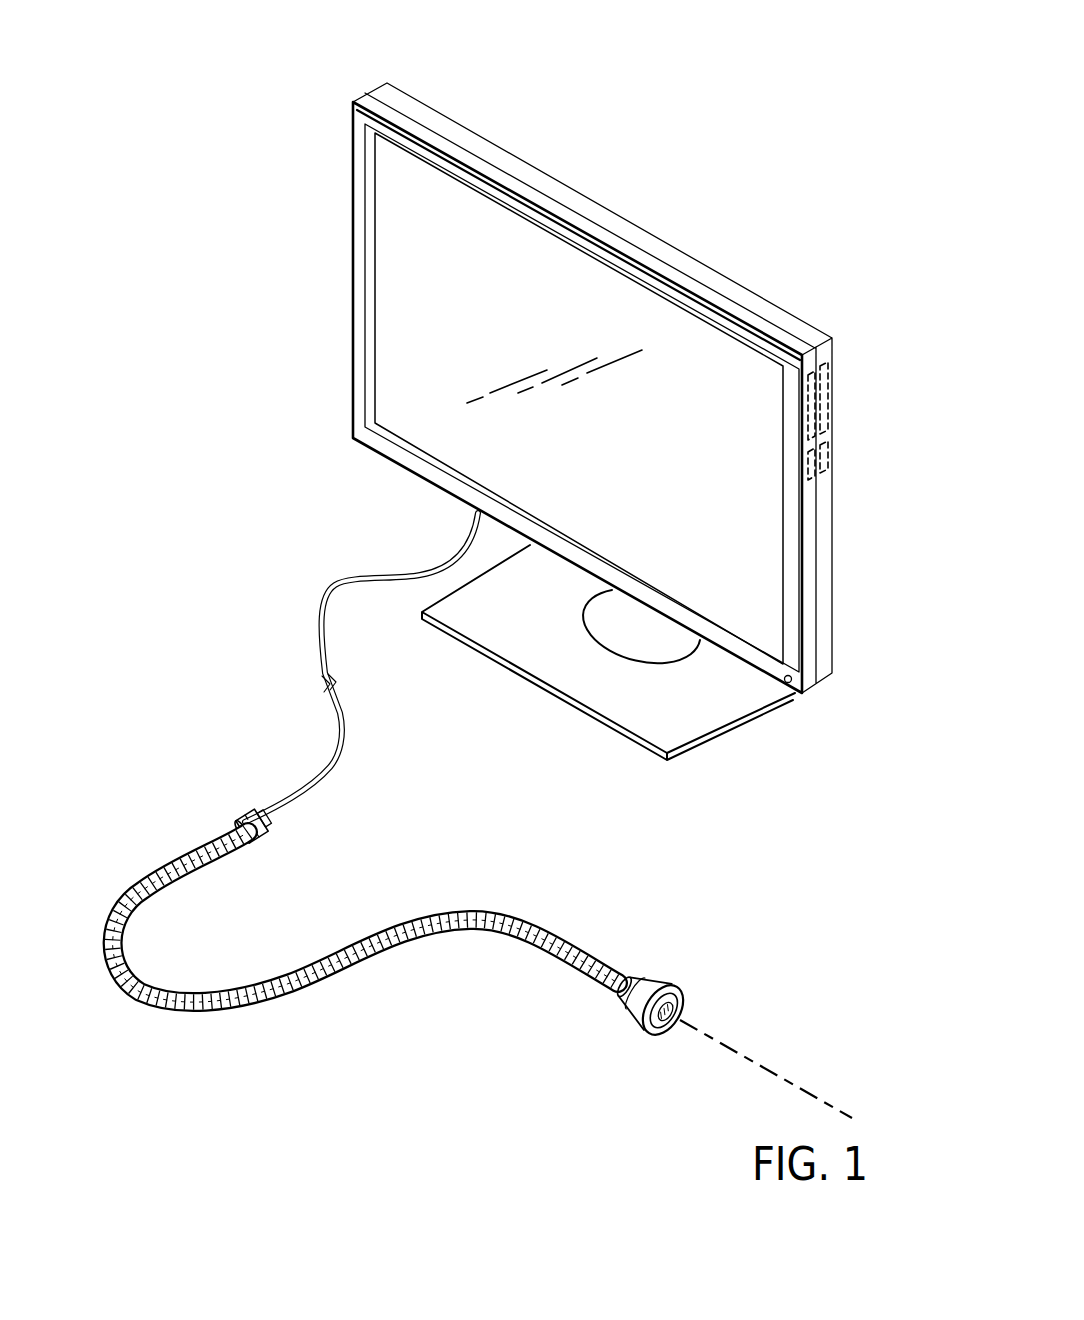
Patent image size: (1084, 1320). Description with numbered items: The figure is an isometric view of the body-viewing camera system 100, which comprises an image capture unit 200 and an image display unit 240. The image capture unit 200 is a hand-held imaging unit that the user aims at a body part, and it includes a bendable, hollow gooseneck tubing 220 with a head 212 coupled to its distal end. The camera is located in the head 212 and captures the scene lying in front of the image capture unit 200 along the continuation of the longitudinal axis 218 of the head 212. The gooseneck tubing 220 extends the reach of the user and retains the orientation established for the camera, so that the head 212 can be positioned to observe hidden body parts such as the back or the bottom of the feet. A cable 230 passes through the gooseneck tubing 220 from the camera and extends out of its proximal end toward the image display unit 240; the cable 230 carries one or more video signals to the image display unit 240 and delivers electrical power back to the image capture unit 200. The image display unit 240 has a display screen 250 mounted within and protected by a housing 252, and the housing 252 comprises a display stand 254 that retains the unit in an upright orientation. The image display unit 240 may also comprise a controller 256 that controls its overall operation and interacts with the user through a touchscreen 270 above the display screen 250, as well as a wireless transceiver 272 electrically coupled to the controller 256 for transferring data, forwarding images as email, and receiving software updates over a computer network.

The body-viewing camera system 100 is at (183, 190).
The image capture unit 200 is at (53, 823).
The head 212 is at (712, 989).
The longitudinal axis 218 is at (760, 1060).
The gooseneck tubing 220 is at (256, 1018).
The cable 230 is at (338, 767).
The image display unit 240 is at (837, 323).
The display screen 250 is at (753, 522).
The housing 252 is at (594, 426).
The display stand 254 is at (718, 727).
The controller 256 is at (828, 385).
The touchscreen 270 is at (763, 598).
The wireless transceiver 272 is at (828, 445).